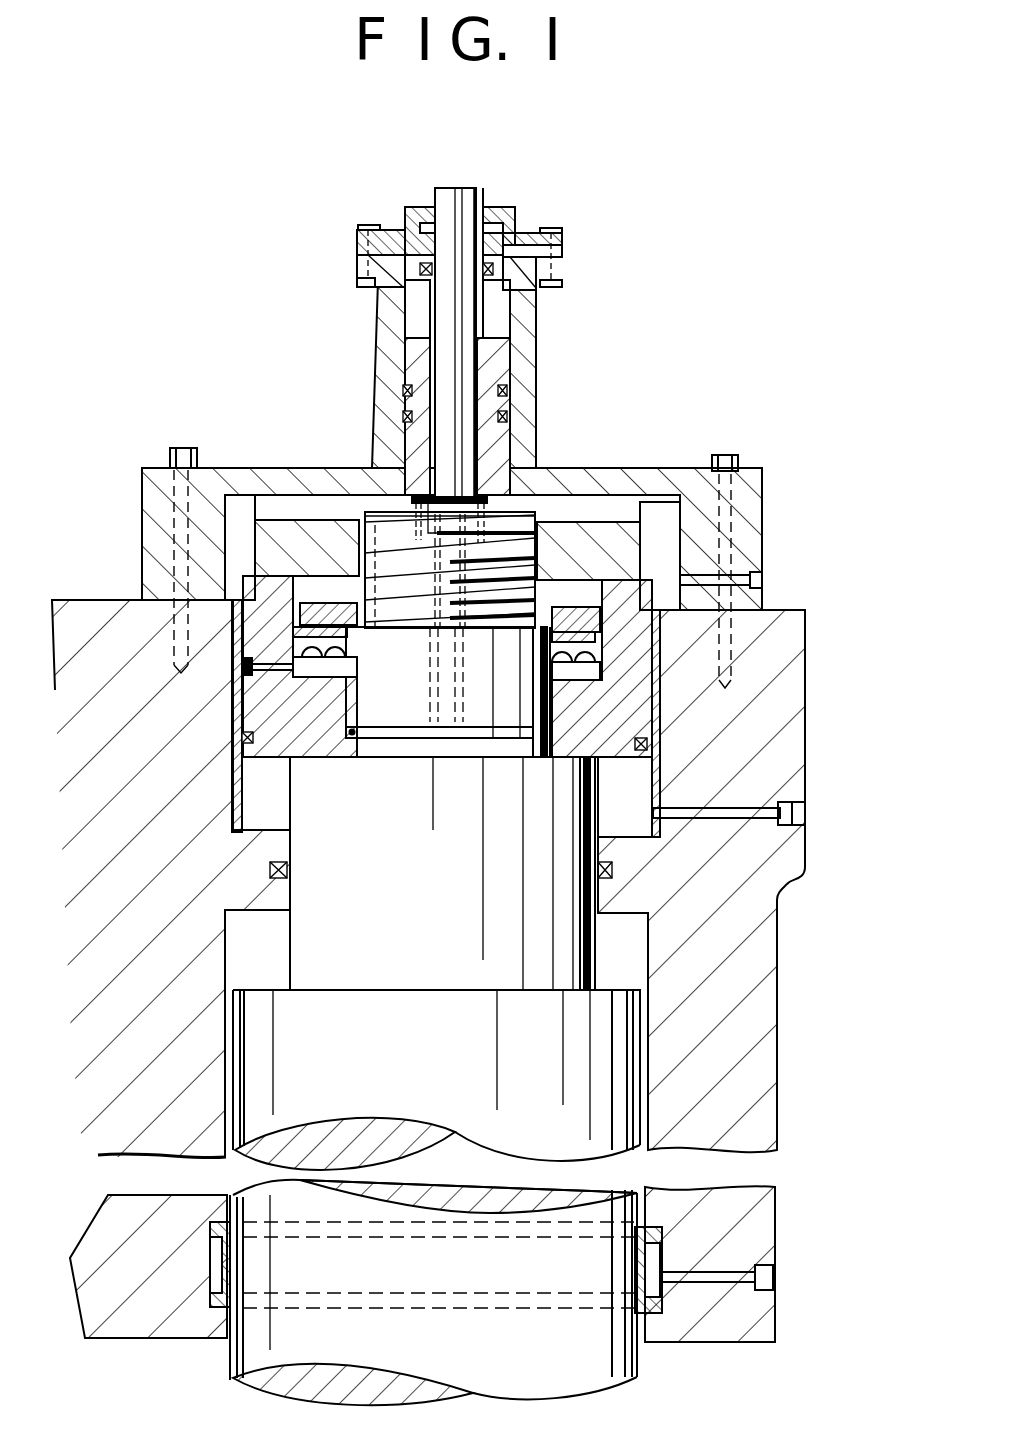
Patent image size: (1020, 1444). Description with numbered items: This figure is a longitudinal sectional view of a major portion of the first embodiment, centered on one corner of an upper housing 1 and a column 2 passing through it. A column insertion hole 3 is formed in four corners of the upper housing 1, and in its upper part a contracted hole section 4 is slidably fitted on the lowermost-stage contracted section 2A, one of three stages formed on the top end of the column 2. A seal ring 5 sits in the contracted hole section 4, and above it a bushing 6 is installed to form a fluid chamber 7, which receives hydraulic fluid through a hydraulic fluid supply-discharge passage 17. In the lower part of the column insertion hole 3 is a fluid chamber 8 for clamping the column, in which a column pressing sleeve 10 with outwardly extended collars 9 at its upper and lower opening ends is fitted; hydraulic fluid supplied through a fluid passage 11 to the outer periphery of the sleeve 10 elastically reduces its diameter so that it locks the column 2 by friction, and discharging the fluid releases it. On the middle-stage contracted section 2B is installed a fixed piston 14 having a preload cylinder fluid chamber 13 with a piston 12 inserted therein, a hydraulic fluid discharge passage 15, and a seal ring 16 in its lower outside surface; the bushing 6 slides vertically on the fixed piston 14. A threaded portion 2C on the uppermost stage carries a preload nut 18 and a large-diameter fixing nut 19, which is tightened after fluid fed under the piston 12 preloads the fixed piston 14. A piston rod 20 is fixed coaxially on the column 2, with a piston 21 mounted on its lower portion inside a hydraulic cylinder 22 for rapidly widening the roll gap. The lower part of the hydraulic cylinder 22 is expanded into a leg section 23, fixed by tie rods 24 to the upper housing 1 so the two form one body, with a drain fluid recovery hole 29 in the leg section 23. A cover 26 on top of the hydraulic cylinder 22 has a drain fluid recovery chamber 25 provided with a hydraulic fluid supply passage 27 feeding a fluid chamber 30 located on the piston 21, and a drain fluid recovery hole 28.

The upper housing 1 is at (140, 971).
The column 2 is at (625, 1068).
The lowermost-stage contracted section 2A is at (468, 893).
The middle-stage contracted section 2B is at (514, 695).
The threaded portion 2C is at (528, 520).
The column insertion hole 3 is at (650, 960).
The contracted hole section 4 is at (597, 928).
The seal ring 5 is at (612, 873).
The bushing 6 is at (236, 772).
The fluid chamber 7 is at (258, 805).
The fluid chamber 8 is at (210, 1252).
The collars 9 is at (213, 1222).
The column pressing sleeve 10 is at (243, 1265).
The fluid passage 11 is at (720, 1272).
The piston 12 is at (598, 635).
The preload cylinder fluid chamber 13 is at (595, 652).
The fixed piston 14 is at (630, 740).
The hydraulic fluid discharge passage 15 is at (232, 690).
The seal ring 16 is at (645, 768).
The hydraulic fluid supply-discharge passage 17 is at (760, 815).
The preload nut 18 is at (645, 565).
The fixing nut 19 is at (588, 545).
The piston rod 20 is at (470, 312).
The piston 21 is at (515, 365).
The hydraulic cylinder 22 is at (390, 380).
The leg section 23 is at (150, 503).
The tie rods 24 is at (183, 448).
The drain fluid recovery chamber 25 is at (437, 225).
The cover 26 is at (380, 243).
The hydraulic fluid supply passage 27 is at (555, 248).
The drain fluid recovery hole 28 is at (505, 230).
The drain fluid recovery hole 29 is at (758, 582).
The fluid chamber 30 is at (418, 310).